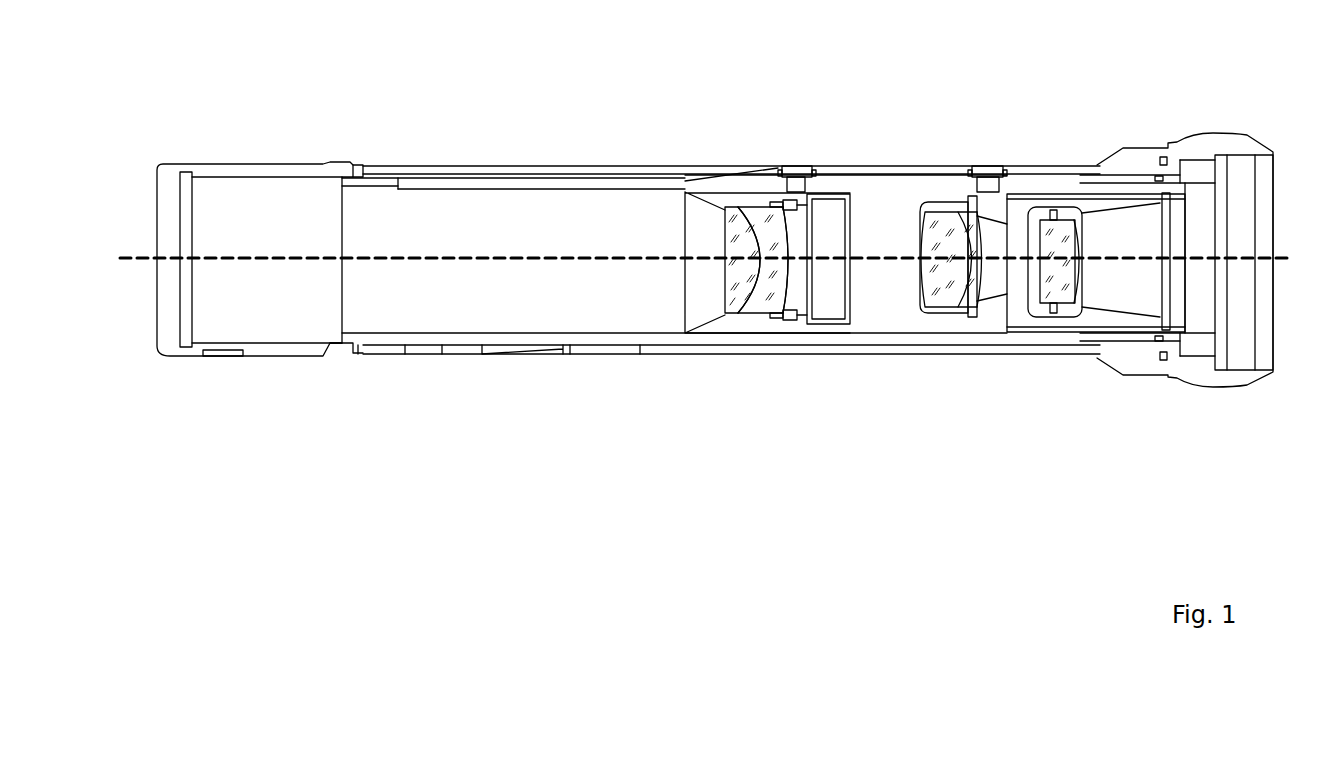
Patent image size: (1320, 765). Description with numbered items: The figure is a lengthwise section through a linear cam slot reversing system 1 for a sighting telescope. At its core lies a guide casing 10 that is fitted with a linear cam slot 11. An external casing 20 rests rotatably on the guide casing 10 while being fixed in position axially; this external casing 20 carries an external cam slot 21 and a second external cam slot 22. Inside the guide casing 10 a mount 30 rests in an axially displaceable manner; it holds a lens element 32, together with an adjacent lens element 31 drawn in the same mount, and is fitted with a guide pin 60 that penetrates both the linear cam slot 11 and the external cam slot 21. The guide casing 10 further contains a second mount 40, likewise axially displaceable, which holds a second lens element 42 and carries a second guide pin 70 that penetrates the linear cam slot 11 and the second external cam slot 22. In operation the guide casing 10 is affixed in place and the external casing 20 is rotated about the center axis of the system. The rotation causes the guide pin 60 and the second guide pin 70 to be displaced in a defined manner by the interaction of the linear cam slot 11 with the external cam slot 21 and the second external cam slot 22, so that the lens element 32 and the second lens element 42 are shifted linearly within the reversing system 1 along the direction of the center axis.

The reversing system 1 is at (1157, 111).
The guide casing 10 is at (276, 168).
The linear cam slot 11 is at (652, 186).
The external casing 20 is at (572, 167).
The external cam slot 21 is at (762, 165).
The second external cam slot 22 is at (516, 349).
The mount 30 is at (709, 245).
The first lens element 31 is at (739, 190).
The lens element 32 is at (766, 291).
The second mount 40 is at (980, 322).
The second lens element 42 is at (946, 291).
The guide pin 60 is at (797, 168).
The second guide pin 70 is at (986, 168).